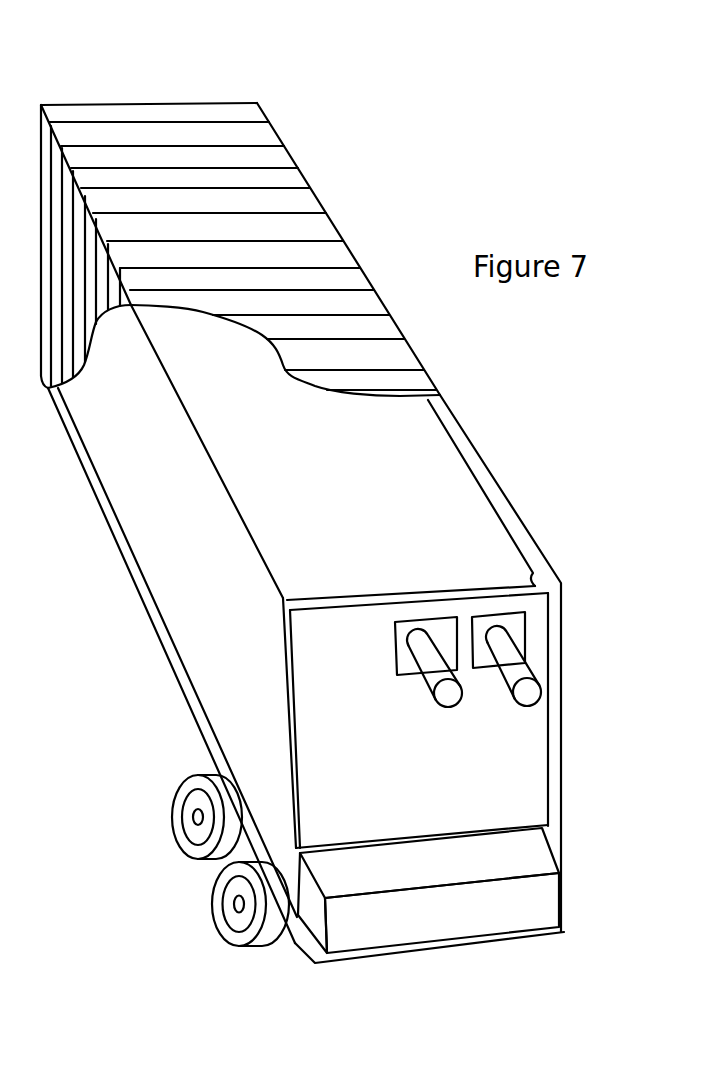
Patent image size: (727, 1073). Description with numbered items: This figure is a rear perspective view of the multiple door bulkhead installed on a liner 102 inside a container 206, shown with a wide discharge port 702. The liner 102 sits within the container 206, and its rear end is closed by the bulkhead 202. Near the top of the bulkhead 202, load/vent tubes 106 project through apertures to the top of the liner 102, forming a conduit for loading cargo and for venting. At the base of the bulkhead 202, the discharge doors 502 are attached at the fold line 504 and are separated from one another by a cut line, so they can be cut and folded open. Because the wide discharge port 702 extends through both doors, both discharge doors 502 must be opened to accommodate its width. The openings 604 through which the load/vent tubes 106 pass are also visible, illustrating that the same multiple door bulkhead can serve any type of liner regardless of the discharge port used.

The liner 102 is at (338, 569).
The load/vent tubes 106 is at (528, 693).
The bulkhead 202 is at (515, 817).
The container 206 is at (255, 155).
The discharge doors 502 is at (452, 947).
The fold line 504 is at (459, 874).
The ports 604 is at (517, 622).
The wide discharge port 702 is at (549, 905).